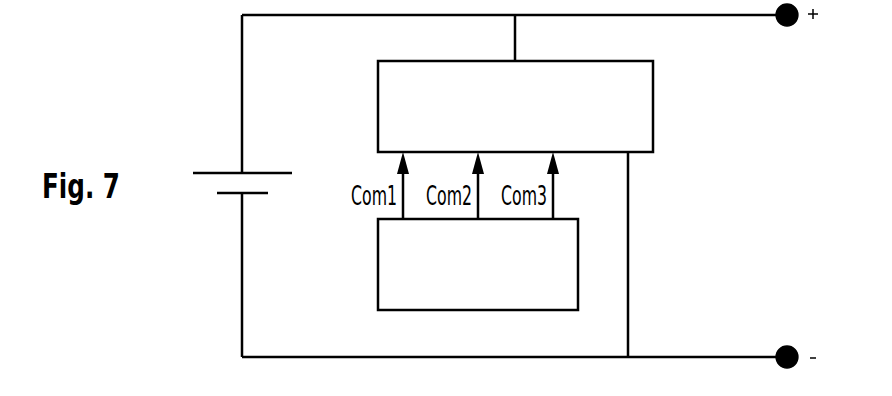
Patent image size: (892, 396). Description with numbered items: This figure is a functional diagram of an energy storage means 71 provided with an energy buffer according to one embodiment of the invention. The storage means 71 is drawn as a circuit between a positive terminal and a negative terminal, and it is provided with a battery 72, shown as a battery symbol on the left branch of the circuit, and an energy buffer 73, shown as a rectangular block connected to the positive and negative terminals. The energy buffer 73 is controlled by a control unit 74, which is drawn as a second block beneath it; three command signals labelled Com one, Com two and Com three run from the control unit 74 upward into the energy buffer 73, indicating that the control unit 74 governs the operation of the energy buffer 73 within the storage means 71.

The storage means 71 is at (230, 96).
The battery 72 is at (222, 172).
The energy buffer 73 is at (378, 108).
The control unit 74 is at (383, 265).